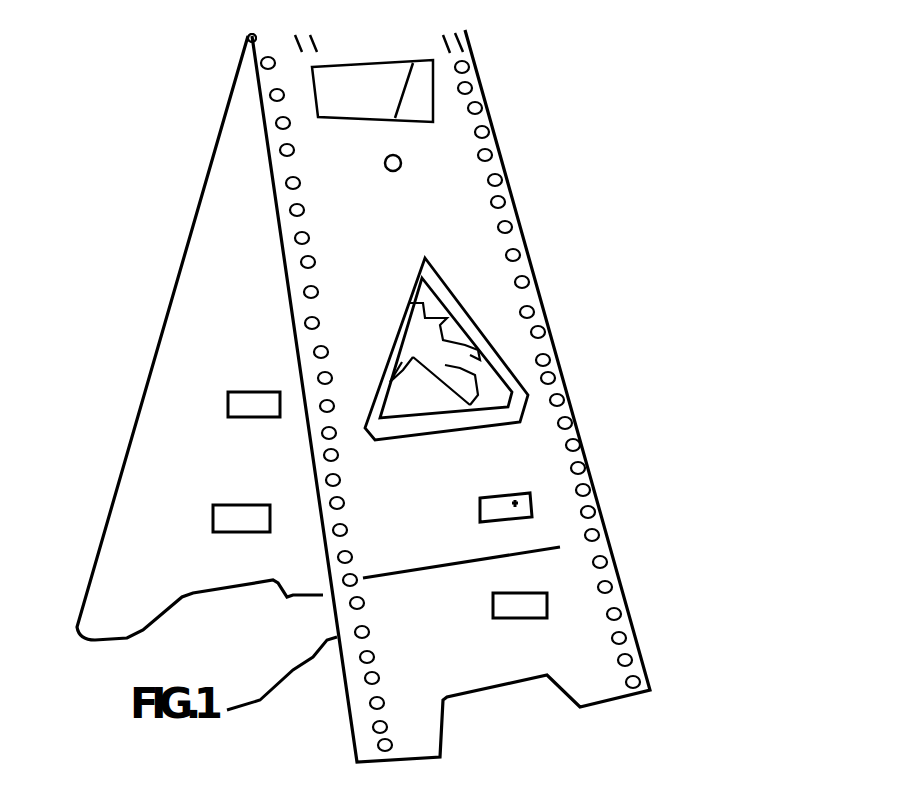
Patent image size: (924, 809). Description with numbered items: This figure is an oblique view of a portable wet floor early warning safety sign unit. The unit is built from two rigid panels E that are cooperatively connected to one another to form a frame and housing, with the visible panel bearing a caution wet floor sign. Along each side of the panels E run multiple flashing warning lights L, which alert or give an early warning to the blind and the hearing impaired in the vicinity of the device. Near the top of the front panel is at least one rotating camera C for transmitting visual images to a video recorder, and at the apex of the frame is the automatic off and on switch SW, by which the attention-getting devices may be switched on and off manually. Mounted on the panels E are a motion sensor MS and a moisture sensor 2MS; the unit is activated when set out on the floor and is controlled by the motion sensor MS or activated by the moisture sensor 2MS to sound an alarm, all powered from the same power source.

The automatic off and on switch SW is at (245, 49).
The multiple flashing warning lights L is at (493, 127).
The rotating camera C is at (378, 163).
The rigid panels E is at (185, 252).
The motion sensor MS is at (220, 392).
The moisture sensor 2MS is at (212, 525).